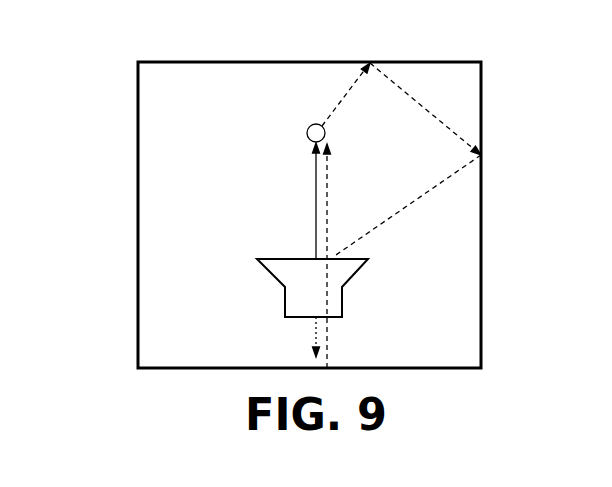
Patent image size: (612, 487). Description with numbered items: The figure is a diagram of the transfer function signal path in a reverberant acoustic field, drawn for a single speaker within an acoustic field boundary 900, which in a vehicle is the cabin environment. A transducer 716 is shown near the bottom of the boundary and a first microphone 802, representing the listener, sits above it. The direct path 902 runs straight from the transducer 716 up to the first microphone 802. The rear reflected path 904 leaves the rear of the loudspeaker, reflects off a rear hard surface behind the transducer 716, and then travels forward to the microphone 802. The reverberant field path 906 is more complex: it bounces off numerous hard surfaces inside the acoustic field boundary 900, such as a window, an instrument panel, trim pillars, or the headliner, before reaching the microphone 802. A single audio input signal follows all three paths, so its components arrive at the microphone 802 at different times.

The acoustic field boundary 900 is at (132, 85).
The first microphone 802 is at (300, 134).
The direct path 902 is at (304, 206).
The transducer 716 is at (263, 273).
The rear reflected path 904 is at (320, 301).
The reverberant field path 906 is at (334, 90).